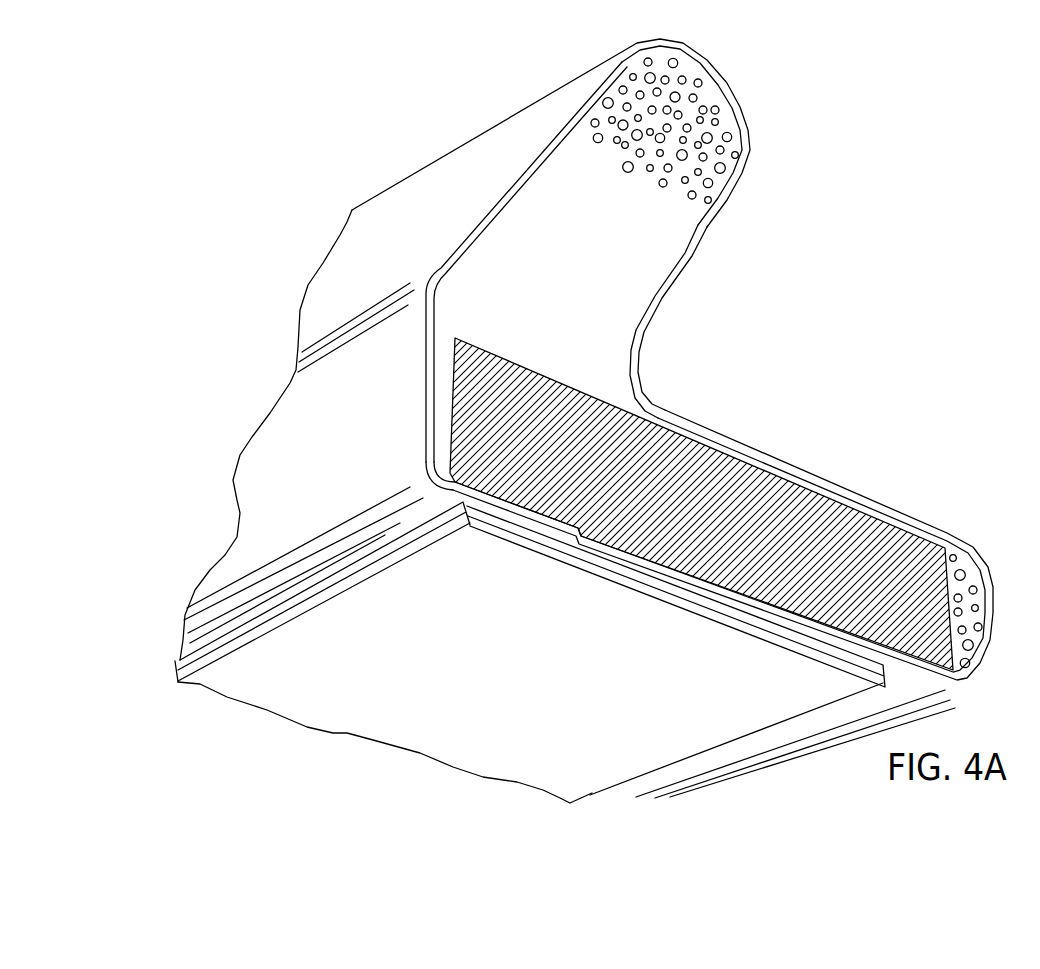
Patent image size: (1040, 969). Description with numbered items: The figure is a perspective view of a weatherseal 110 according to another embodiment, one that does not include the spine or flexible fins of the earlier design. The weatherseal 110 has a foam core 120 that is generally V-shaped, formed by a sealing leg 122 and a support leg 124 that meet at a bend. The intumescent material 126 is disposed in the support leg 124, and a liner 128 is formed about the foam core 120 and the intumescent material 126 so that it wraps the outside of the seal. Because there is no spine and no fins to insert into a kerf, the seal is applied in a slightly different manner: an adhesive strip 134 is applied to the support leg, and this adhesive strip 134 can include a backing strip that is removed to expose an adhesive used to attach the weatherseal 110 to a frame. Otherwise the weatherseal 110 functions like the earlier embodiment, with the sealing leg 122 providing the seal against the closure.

The weatherseal 110 is at (351, 140).
The foam core 120 is at (493, 260).
The sealing leg 122 is at (899, 445).
The support leg 124 is at (774, 144).
The intumescent material 126 is at (902, 550).
The liner 128 is at (691, 257).
The adhesive strip 134 is at (347, 707).